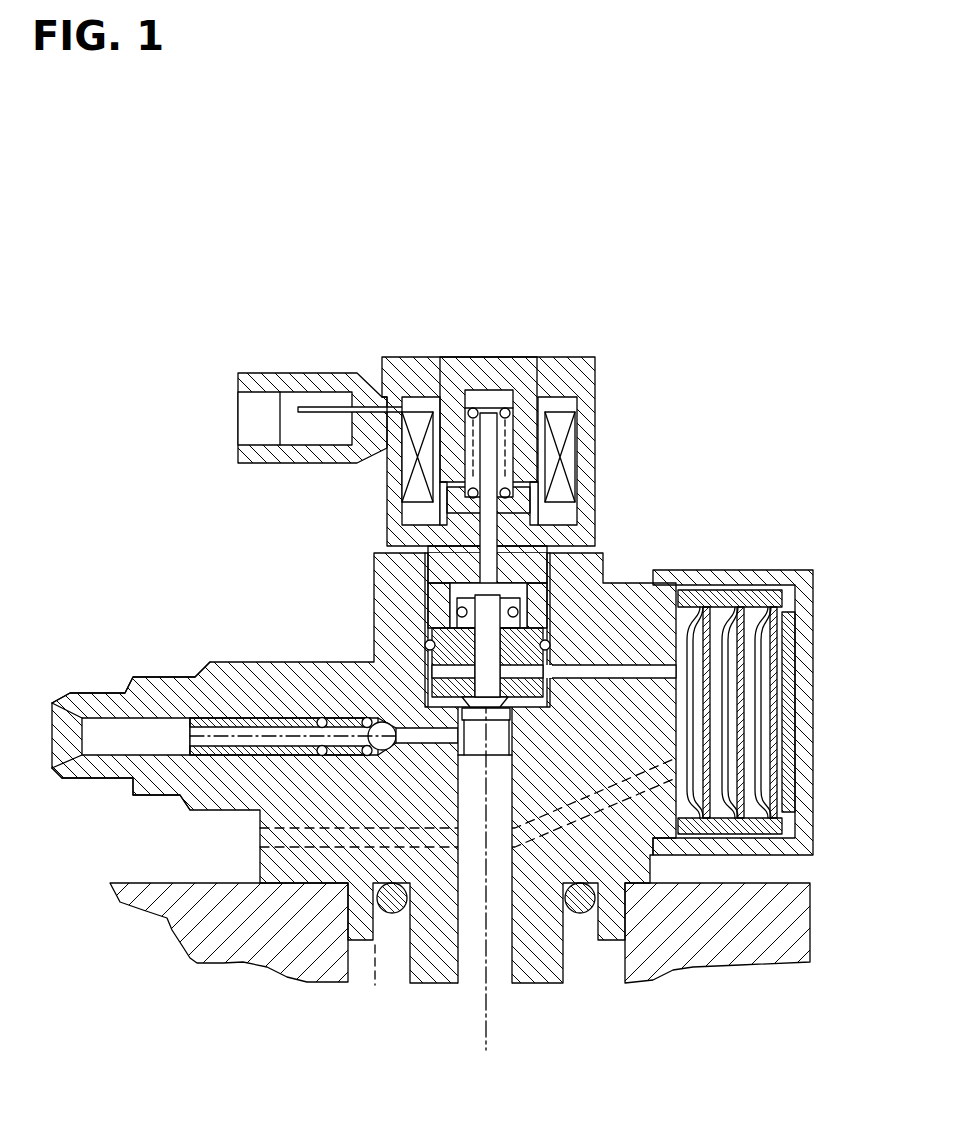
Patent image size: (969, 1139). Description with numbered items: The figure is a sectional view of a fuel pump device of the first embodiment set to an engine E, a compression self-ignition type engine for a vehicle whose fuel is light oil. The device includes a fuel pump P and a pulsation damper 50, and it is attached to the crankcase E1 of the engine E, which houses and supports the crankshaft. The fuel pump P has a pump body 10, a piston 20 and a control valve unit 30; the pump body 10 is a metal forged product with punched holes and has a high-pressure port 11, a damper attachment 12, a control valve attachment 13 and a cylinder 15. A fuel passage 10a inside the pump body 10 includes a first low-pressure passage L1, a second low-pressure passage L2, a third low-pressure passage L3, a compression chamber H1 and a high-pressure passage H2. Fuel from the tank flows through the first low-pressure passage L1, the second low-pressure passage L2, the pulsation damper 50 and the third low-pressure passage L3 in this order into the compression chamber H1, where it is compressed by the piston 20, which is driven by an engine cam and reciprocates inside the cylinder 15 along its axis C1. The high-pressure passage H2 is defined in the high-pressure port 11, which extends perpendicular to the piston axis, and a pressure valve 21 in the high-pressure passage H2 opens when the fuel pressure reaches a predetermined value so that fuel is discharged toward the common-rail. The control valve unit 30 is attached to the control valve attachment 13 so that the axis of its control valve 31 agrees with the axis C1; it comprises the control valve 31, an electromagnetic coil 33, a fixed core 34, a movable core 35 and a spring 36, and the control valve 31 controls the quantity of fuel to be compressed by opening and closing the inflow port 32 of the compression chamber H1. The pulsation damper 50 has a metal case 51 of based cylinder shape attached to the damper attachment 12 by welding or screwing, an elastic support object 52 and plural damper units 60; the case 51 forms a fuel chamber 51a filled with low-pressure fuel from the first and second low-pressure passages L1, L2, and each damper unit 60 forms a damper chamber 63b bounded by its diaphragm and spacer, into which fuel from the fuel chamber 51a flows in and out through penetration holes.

The pump body 10 is at (225, 662).
The fuel passage 10a is at (258, 837).
The high-pressure port 11 is at (148, 677).
The damper attachment 12 is at (662, 815).
The control valve attachment 13 is at (397, 593).
The cylinder 15 is at (423, 958).
The piston 20 is at (472, 960).
The pressure valve 21 is at (370, 734).
The control valve unit 30 is at (335, 362).
The control valve 31 is at (425, 650).
The inflow port 32 is at (490, 755).
The electromagnetic coil 33 is at (418, 422).
The fixed core 34 is at (455, 437).
The movable core 35 is at (473, 518).
The spring 36 is at (500, 413).
The pulsation damper 50 is at (802, 553).
The case 51 is at (813, 756).
The fuel chamber 51a is at (795, 602).
The elastic support object 52 is at (795, 832).
The damper unit 60 is at (728, 677).
The damper chamber 63b is at (685, 610).
The fuel pump P is at (75, 672).
The engine E is at (167, 932).
The crankcase E1 is at (212, 945).
The compression chamber H1 is at (462, 737).
The high-pressure passage H2 is at (107, 737).
The first low-pressure passage L1 is at (635, 783).
The second low-pressure passage L2 is at (612, 673).
The third low-pressure passage L3 is at (555, 672).
The axis C1 is at (485, 741).